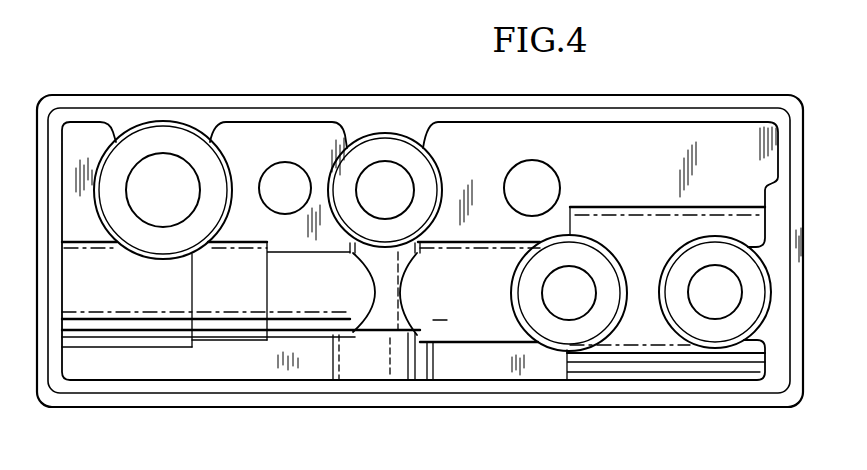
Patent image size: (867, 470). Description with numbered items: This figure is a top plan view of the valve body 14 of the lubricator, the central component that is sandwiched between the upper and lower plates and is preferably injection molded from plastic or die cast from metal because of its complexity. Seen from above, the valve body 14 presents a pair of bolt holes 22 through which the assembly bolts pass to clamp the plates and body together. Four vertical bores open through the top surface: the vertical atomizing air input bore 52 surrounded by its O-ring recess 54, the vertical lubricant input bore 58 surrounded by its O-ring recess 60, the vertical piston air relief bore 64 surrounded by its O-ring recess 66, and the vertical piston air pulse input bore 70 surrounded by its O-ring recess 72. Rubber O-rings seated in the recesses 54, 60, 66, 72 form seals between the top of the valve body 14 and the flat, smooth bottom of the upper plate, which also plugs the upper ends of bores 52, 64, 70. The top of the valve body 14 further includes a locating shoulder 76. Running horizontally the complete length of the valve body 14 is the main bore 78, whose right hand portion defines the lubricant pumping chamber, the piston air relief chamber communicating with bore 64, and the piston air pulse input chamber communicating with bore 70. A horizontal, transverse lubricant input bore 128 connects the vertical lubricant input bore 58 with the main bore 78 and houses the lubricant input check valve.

The valve body 14 is at (800, 228).
The bolt holes 22 is at (277, 175).
The vertical atomizing air input bore 52 is at (163, 173).
The O-ring recess 54 is at (192, 150).
The vertical lubricant input bore 58 is at (373, 173).
The O-ring recess 60 is at (405, 152).
The vertical piston air relief bore 64 is at (567, 312).
The O-ring recess 66 is at (602, 317).
The vertical piston air pulse input bore 70 is at (717, 313).
The O-ring recess 72 is at (757, 298).
The locating shoulder 76 is at (150, 393).
The main bore 78 is at (633, 250).
The transverse lubricant input bore 128 is at (387, 317).